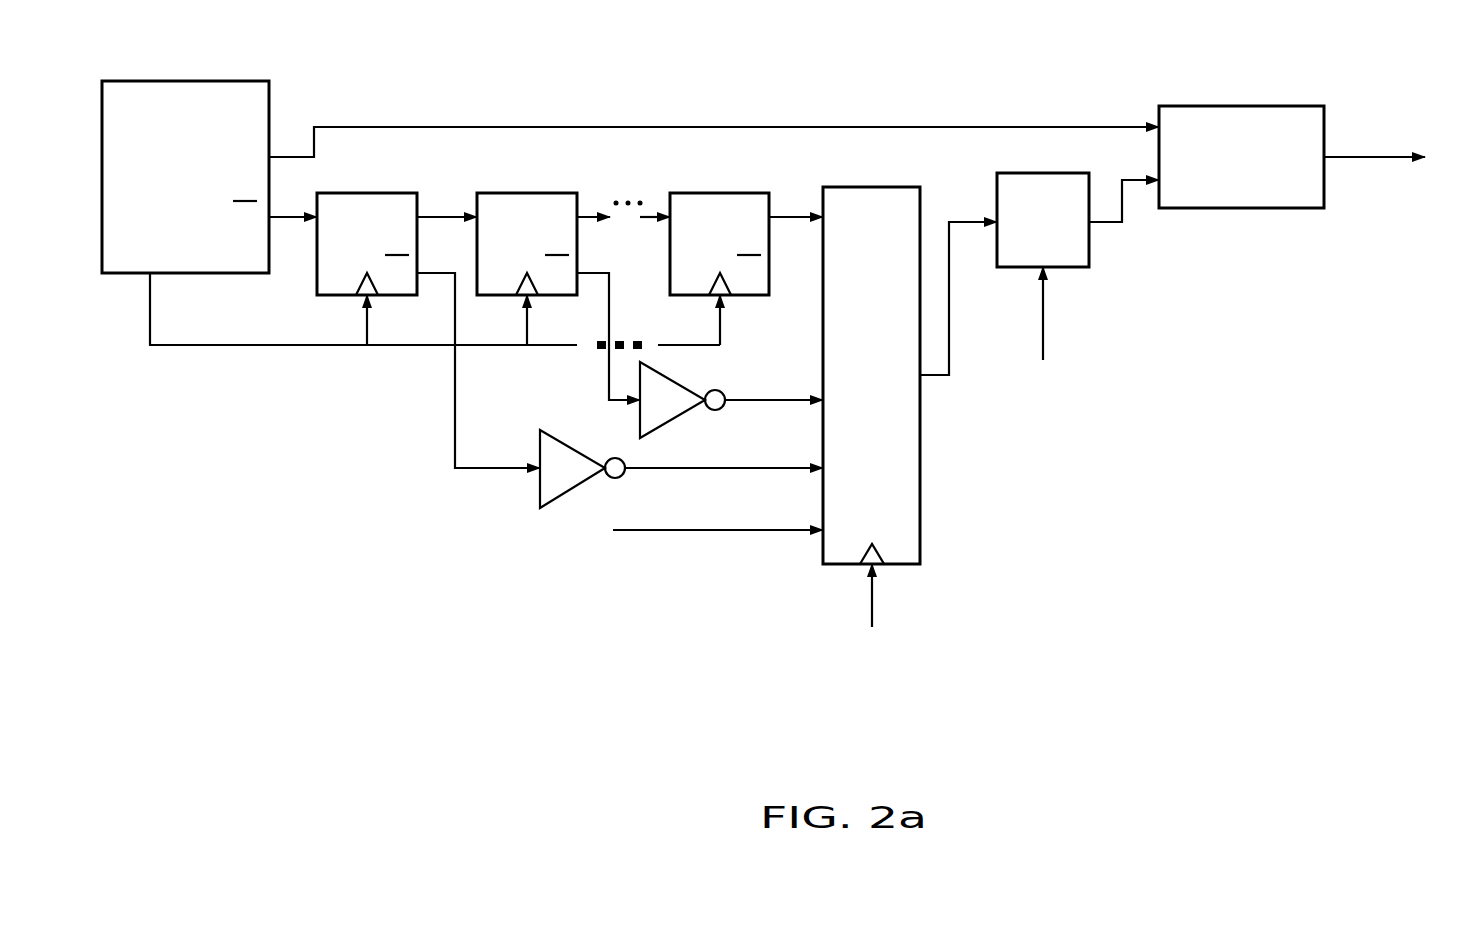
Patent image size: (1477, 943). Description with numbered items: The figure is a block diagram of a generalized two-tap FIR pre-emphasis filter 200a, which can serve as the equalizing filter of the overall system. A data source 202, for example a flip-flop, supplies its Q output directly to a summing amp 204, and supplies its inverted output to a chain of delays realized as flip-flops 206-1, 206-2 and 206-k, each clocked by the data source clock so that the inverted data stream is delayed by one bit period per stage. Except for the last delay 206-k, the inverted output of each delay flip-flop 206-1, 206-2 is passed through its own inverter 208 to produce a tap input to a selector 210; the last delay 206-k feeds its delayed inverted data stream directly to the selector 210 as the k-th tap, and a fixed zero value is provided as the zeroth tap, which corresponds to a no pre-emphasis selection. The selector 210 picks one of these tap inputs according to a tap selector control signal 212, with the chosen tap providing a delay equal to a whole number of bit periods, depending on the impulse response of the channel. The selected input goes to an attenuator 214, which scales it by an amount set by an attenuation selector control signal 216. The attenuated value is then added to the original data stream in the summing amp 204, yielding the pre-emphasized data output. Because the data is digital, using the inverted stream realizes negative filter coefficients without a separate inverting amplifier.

The two-tap FIR pre-emphasis filter 200a is at (784, 385).
The data source 202 is at (222, 81).
The summing amp 204 is at (1219, 106).
The delay 206-1 is at (343, 193).
The delay 206-2 is at (517, 193).
The last delay 206-k is at (700, 193).
The inverter 208 is at (540, 493).
The selector 210 is at (920, 508).
The tap selector control signal 212 is at (872, 606).
The attenuator 214 is at (1089, 237).
The attenuation selector control signal 216 is at (1043, 328).